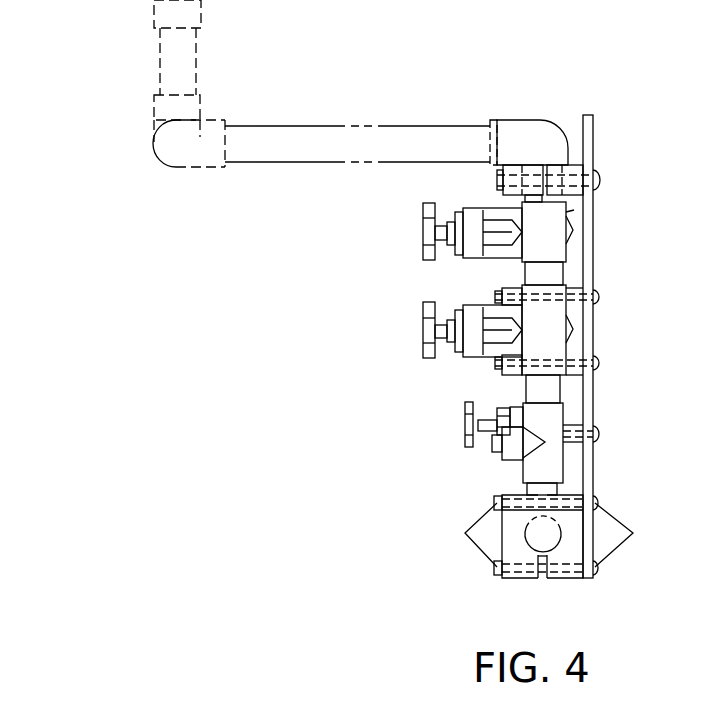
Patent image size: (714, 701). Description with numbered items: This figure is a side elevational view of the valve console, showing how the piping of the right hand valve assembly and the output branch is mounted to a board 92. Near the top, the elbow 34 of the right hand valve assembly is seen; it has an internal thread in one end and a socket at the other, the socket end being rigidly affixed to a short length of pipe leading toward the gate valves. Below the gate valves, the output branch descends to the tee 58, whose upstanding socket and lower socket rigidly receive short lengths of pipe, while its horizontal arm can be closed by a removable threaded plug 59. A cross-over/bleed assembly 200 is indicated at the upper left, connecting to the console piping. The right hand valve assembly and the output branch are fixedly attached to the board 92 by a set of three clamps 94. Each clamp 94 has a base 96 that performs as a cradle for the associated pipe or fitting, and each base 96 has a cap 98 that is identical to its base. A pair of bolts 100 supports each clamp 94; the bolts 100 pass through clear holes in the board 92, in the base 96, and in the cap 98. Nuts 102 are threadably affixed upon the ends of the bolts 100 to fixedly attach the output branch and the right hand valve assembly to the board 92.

The cross-over/bleed assembly 200 is at (137, 70).
The elbow 34 is at (532, 130).
The board 92 is at (593, 278).
The tee 58 is at (553, 458).
The removable threaded plug 59 is at (490, 448).
The clamp 94 is at (545, 588).
The base 96 is at (567, 580).
The cap 98 is at (533, 575).
The bolts 100 is at (638, 535).
The nuts 102 is at (462, 535).